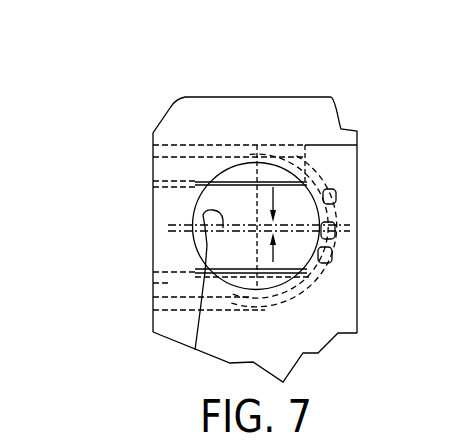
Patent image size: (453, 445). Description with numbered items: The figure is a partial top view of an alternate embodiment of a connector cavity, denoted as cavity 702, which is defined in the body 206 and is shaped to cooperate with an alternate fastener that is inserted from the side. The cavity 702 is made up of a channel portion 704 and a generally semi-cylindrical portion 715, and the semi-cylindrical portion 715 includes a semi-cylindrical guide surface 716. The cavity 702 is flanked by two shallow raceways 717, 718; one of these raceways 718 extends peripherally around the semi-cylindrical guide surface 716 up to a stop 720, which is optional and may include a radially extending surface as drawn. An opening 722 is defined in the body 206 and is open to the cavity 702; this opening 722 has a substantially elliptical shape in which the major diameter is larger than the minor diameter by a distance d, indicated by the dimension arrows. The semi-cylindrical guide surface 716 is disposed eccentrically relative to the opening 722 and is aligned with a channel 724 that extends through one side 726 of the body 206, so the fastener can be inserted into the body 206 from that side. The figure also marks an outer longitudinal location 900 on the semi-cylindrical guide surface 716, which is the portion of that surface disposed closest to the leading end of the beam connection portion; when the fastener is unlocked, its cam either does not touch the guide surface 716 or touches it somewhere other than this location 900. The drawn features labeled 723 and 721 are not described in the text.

The cavity 702 is at (152, 252).
The body 206 is at (342, 174).
The side of the body 726 is at (158, 336).
The raceway 717 is at (160, 149).
The channel 724 is at (162, 168).
The channel portion 704 is at (170, 204).
The opening 722 is at (231, 164).
The semi-cylindrical portion 715 is at (291, 207).
The bore axis 723 is at (257, 201).
The outer longitudinal location 900 is at (263, 147).
The semi-cylindrical guide surface 716 is at (337, 249).
The stop 720 is at (343, 200).
The raceway 718 is at (330, 283).
The retaining clip 721 is at (195, 350).
The distance d is at (273, 262).